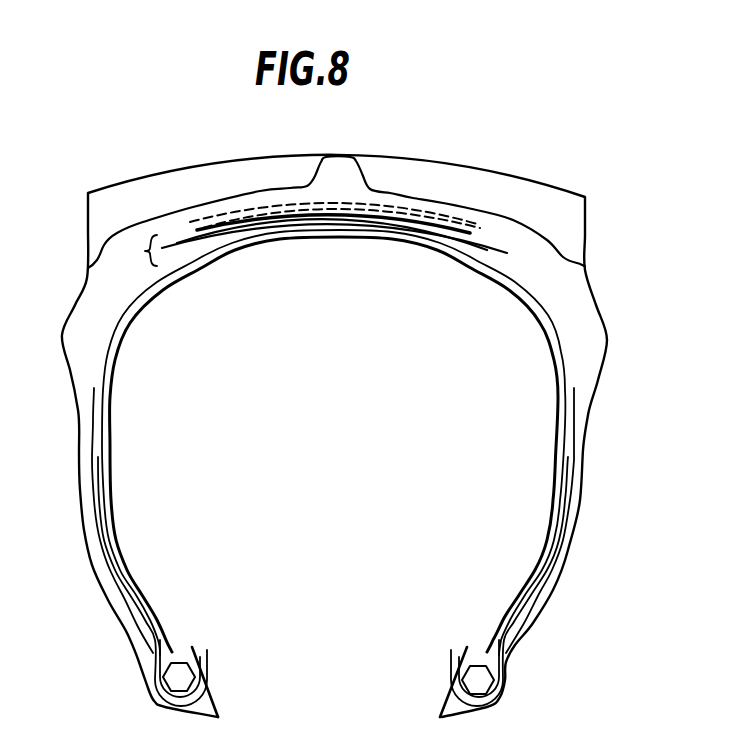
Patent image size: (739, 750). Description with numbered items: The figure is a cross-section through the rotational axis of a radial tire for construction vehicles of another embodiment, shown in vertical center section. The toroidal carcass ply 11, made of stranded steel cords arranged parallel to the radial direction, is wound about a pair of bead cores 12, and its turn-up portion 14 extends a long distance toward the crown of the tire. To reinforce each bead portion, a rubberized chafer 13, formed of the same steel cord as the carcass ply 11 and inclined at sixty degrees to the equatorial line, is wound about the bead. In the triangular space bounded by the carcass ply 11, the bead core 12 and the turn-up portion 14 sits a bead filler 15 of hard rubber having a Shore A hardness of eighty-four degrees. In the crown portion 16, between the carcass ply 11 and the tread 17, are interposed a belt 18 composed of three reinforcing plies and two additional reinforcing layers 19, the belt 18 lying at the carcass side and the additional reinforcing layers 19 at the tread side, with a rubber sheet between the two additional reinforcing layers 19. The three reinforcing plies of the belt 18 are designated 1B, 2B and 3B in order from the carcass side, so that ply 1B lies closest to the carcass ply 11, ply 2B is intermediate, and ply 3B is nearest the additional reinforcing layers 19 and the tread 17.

The carcass ply 11 is at (547, 313).
The bead core 12 is at (478, 680).
The chafer 13 is at (522, 614).
The turn-up portion 14 is at (575, 455).
The bead filler 15 is at (518, 598).
The crown portion 16 is at (408, 177).
The tread 17 is at (293, 172).
The belt 18 is at (145, 252).
The additional reinforcing layer 19 is at (233, 215).
The first reinforcing ply of the belt 1B is at (384, 216).
The second reinforcing ply of the belt 2B is at (421, 226).
The third reinforcing ply of the belt 3B is at (443, 241).